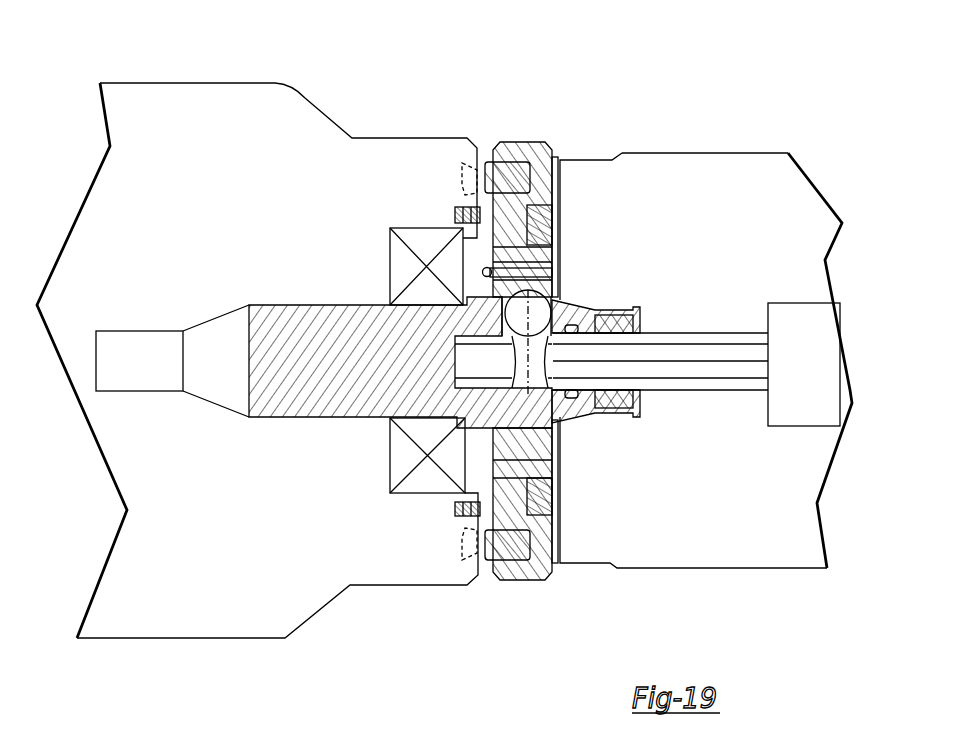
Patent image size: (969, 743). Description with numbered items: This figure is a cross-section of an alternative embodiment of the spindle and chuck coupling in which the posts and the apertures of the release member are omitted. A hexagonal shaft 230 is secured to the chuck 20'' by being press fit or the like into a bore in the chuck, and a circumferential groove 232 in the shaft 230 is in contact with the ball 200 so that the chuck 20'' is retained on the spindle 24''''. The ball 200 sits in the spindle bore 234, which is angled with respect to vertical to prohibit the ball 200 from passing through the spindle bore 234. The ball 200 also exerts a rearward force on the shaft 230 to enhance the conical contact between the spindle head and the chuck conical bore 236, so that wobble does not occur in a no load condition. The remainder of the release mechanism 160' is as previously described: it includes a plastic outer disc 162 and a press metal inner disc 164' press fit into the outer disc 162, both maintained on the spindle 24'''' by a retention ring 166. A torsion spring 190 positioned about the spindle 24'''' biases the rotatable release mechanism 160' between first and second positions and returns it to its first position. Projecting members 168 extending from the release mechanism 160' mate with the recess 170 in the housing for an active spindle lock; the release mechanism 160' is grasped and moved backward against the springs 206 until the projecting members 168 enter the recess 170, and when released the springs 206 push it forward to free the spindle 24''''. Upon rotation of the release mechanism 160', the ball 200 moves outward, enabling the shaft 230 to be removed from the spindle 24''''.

The spindle 24'''' is at (324, 432).
The torsion spring 190 is at (483, 271).
The spindle bore 234 is at (495, 300).
The chuck conical bore 236 is at (530, 313).
The circumferential groove 232 is at (530, 358).
The recess 170 is at (470, 165).
The spring 206 is at (465, 517).
The projecting member 168 is at (512, 183).
The release mechanism 160' is at (553, 185).
The plastic outer disc 162 is at (553, 157).
The press metal inner disc 164' is at (537, 552).
The retention ring 166 is at (558, 428).
The ball 200 is at (565, 296).
The hexagonal shaft 230 is at (740, 353).
The chuck 20'' is at (720, 403).